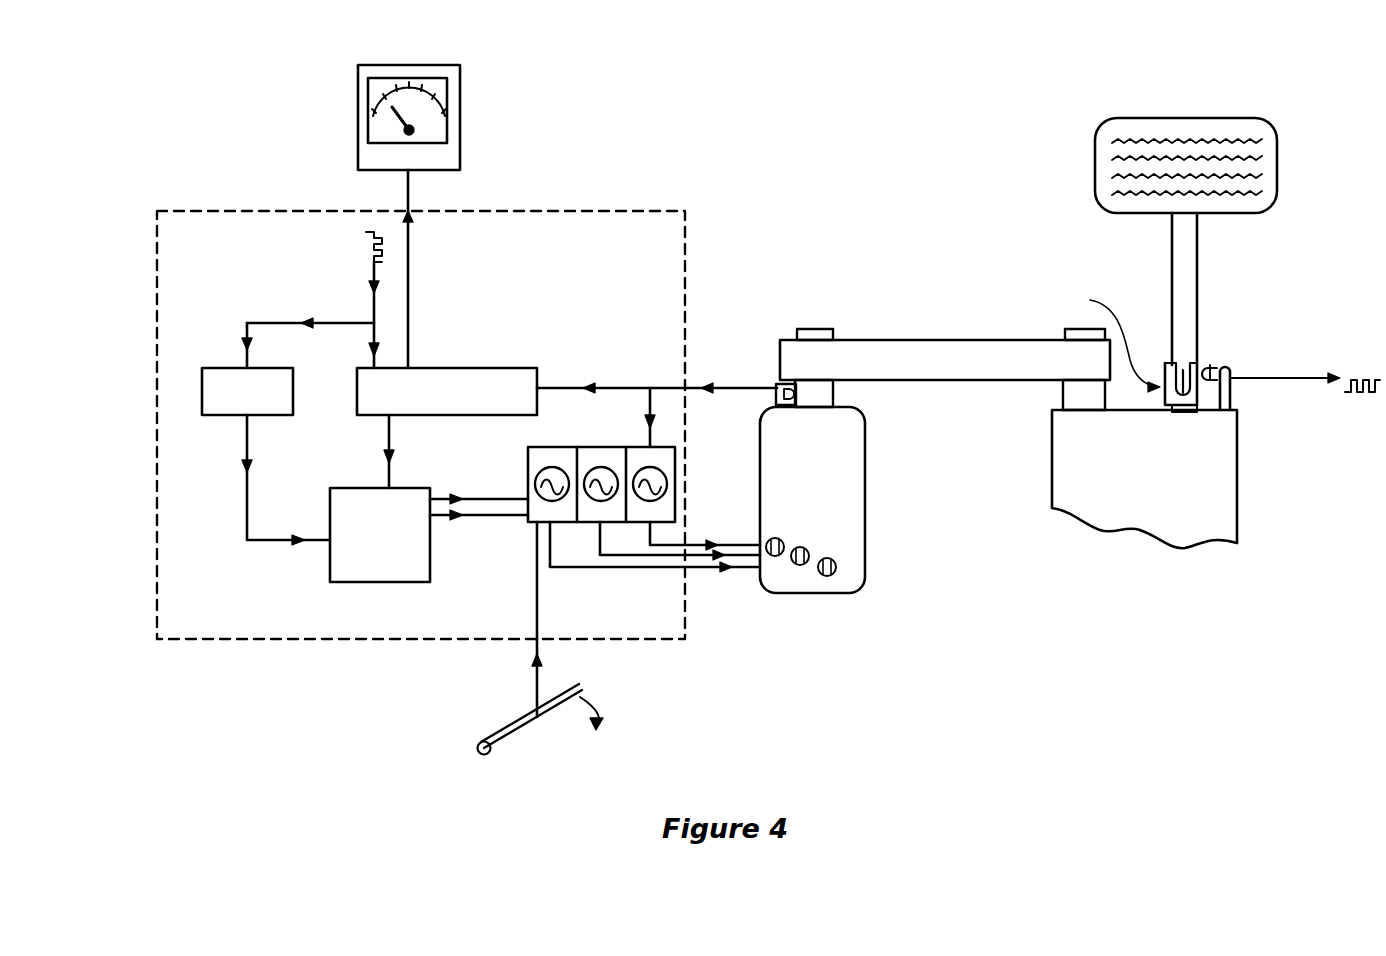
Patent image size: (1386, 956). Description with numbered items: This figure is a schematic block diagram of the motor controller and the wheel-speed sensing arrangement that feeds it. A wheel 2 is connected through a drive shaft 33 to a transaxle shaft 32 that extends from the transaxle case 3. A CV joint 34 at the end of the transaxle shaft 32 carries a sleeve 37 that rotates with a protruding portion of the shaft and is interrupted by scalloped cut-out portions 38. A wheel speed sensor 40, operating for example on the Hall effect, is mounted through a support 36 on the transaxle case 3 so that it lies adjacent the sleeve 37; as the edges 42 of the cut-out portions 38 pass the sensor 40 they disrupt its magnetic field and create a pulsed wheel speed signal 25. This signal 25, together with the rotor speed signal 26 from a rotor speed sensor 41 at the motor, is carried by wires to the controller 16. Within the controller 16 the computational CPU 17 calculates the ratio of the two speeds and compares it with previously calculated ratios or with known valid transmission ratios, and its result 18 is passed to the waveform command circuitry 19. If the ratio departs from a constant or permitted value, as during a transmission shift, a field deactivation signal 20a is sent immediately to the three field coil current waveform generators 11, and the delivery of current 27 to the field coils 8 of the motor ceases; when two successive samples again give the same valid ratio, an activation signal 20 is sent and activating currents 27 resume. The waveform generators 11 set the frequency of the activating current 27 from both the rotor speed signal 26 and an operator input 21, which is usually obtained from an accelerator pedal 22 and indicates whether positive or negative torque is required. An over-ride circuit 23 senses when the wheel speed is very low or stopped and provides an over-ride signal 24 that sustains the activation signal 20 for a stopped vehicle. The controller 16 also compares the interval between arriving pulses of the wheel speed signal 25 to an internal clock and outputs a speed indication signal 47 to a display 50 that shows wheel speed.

The wheel 2 is at (1100, 186).
The transaxle case 3 is at (1205, 497).
The field coils 8 is at (835, 517).
The field coil current waveform generators 11 is at (675, 484).
The controller 16 is at (305, 211).
The computational CPU 17 is at (452, 389).
The result 18 is at (389, 453).
The waveform command circuitry 19 is at (338, 548).
The activation signal 20 is at (478, 500).
The field deactivation signal 20a is at (445, 515).
The operator input 21 is at (545, 672).
The accelerator pedal 22 is at (519, 727).
The over-ride circuit 23 is at (213, 388).
The over-ride signal 24 is at (247, 492).
The wheel speed signal 25 is at (814, 312).
The rotor speed signal 26 is at (733, 388).
The activating current 27 is at (733, 570).
The transaxle shaft 32 is at (1190, 410).
The drive shaft 33 is at (1185, 245).
The CV joint 34 is at (1112, 338).
The support 36 is at (1225, 392).
The sleeve 37 is at (1170, 395).
The scalloped cut-out portions 38 is at (1185, 380).
The wheel speed sensor 40 is at (1215, 370).
The rotor speed sensor 41 is at (772, 388).
The edges 42 is at (1203, 385).
The speed indication signal 47 is at (410, 283).
The display 50 is at (445, 155).